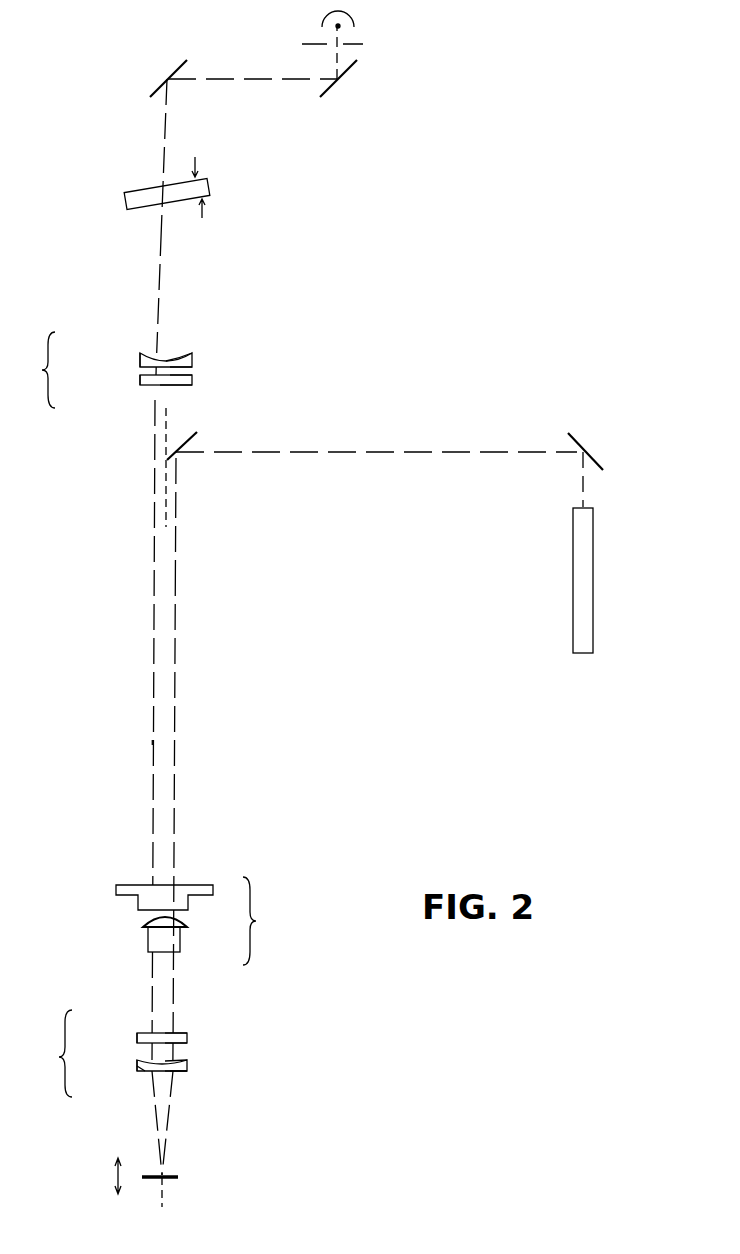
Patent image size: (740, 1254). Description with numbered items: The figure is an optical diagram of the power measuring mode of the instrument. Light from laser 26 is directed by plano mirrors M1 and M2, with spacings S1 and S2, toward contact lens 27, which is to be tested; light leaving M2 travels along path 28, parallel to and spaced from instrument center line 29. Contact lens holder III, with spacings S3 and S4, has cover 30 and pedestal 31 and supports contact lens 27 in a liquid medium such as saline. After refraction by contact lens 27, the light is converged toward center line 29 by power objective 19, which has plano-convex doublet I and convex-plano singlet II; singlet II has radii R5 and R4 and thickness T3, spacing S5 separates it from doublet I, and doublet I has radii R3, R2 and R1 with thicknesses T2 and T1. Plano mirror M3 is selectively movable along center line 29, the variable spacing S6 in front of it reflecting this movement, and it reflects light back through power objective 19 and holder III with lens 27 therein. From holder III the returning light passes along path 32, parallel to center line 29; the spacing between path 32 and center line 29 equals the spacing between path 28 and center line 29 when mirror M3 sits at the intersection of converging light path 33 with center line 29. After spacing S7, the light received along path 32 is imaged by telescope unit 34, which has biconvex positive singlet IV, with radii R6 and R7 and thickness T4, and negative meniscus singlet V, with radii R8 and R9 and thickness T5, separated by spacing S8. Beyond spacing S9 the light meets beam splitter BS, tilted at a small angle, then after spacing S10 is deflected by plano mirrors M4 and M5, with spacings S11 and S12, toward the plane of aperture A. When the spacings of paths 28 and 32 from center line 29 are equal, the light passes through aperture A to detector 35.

The detector 35 is at (357, 20).
The aperture A is at (363, 45).
The spacing S12 is at (296, 53).
The plano mirror M4 is at (154, 64).
The plano mirror M5 is at (354, 88).
The spacing S11 is at (252, 102).
The spacing S10 is at (132, 154).
The beam splitter BS is at (125, 197).
The spacing S9 is at (124, 291).
The telescope unit 34 is at (28, 370).
The negative meniscus singlet V is at (212, 356).
The biconvex positive singlet IV is at (218, 389).
The lens thickness T5 is at (115, 346).
The spacing S8 is at (114, 371).
The lens thickness T4 is at (113, 398).
The lens surface radius R9 is at (192, 336).
The lens surface radius R8 is at (207, 361).
The lens surface radius R7 is at (205, 387).
The lens surface radius R6 is at (193, 407).
The plano mirror M2 is at (199, 462).
The instrument center line 29 is at (167, 509).
The spacing S2 is at (376, 433).
The plano mirror M1 is at (601, 436).
The spacing S1 is at (552, 479).
The laser 26 is at (593, 560).
The light path 28 is at (176, 571).
The spacing S7 is at (122, 642).
The spacing S3 is at (202, 801).
The light path 32 is at (152, 738).
The contact lens holder III is at (270, 921).
The cover 30 is at (127, 885).
The contact lens 27 is at (147, 923).
The pedestal 31 is at (148, 945).
The spacing S4 is at (122, 992).
The power objective 19 is at (53, 1053).
The convex-plano singlet II is at (210, 1039).
The plano-convex doublet I is at (206, 1073).
The lens thickness T3 is at (129, 1018).
The spacing S5 is at (126, 1040).
The lens thickness T2 is at (116, 1063).
The lens thickness T1 is at (125, 1087).
The lens surface radius R5 is at (192, 1007).
The lens surface radius R4 is at (200, 1026).
The lens surface radius R3 is at (200, 1058).
The lens surface radius R2 is at (204, 1085).
The lens surface radius R1 is at (192, 1094).
The spacing S6 is at (136, 1123).
The converging light path 33 is at (165, 1135).
The plano mirror M3 is at (174, 1171).